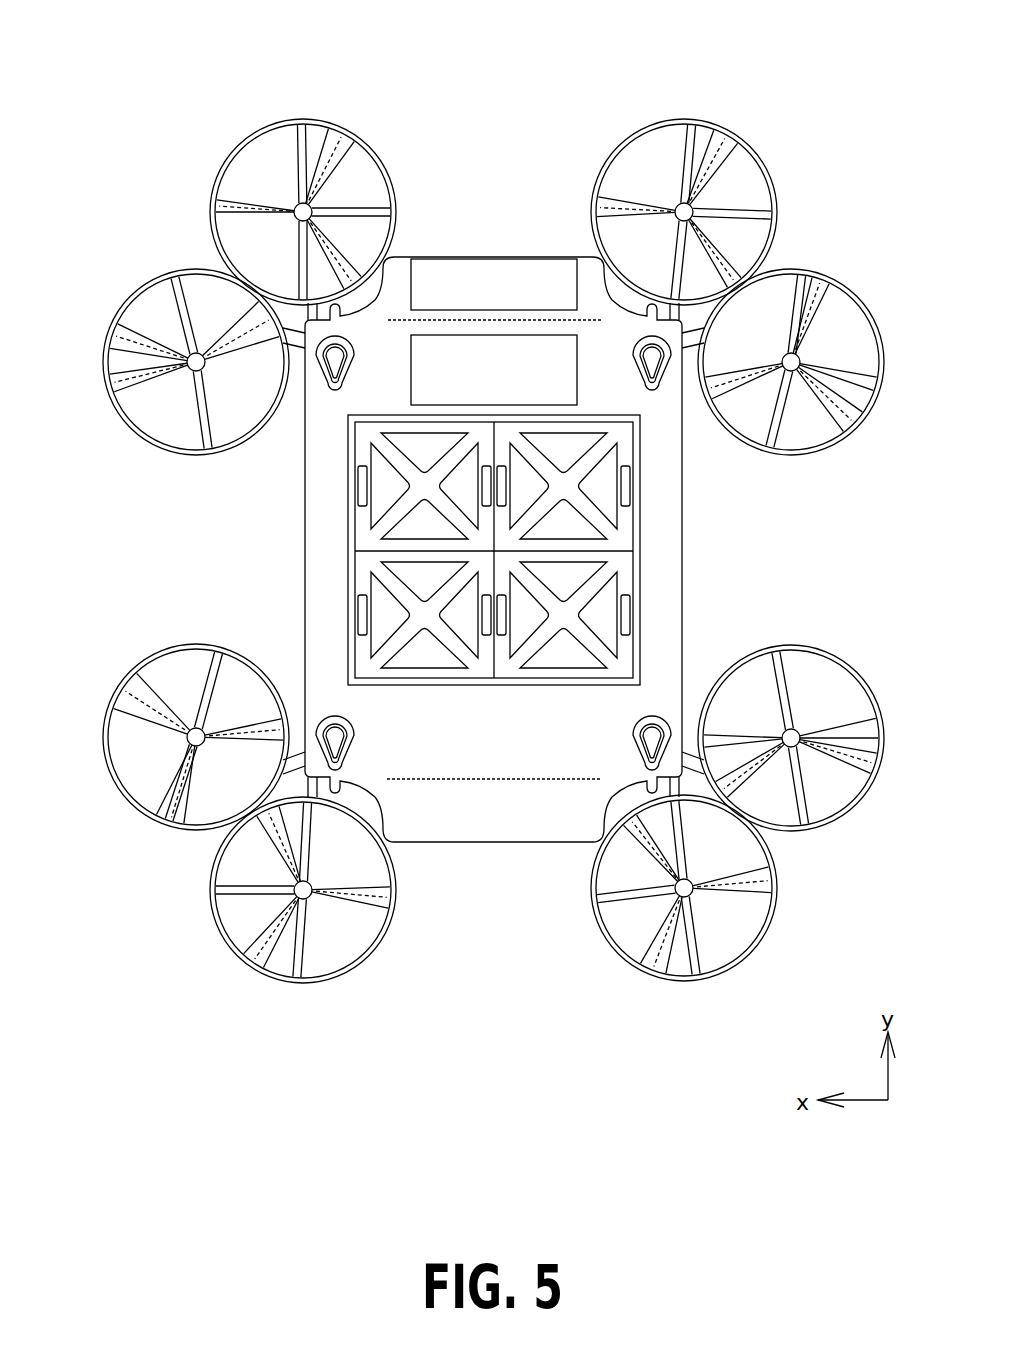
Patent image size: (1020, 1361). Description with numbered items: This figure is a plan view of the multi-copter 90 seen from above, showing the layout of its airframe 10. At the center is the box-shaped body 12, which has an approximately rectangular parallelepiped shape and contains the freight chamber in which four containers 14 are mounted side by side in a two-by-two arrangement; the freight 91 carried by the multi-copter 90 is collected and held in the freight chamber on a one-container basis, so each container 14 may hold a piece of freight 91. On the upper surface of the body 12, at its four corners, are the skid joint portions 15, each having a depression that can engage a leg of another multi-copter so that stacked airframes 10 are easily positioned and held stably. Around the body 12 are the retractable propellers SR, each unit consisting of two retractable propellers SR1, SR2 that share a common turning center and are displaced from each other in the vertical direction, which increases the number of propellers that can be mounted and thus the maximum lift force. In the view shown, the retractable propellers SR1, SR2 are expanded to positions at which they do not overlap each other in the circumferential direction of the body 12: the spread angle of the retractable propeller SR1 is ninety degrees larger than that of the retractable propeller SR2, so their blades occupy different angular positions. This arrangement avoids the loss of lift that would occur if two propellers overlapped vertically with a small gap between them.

The multi-copter 90 is at (163, 42).
The airframe 10 is at (467, 578).
The body 12 is at (322, 563).
The container 14 is at (565, 612).
The freight 91 is at (494, 550).
The skid joint portion 15 is at (332, 722).
The retractable propeller SR is at (467, 578).
The retractable propeller SR1 is at (220, 933).
The retractable propeller SR2 is at (133, 808).